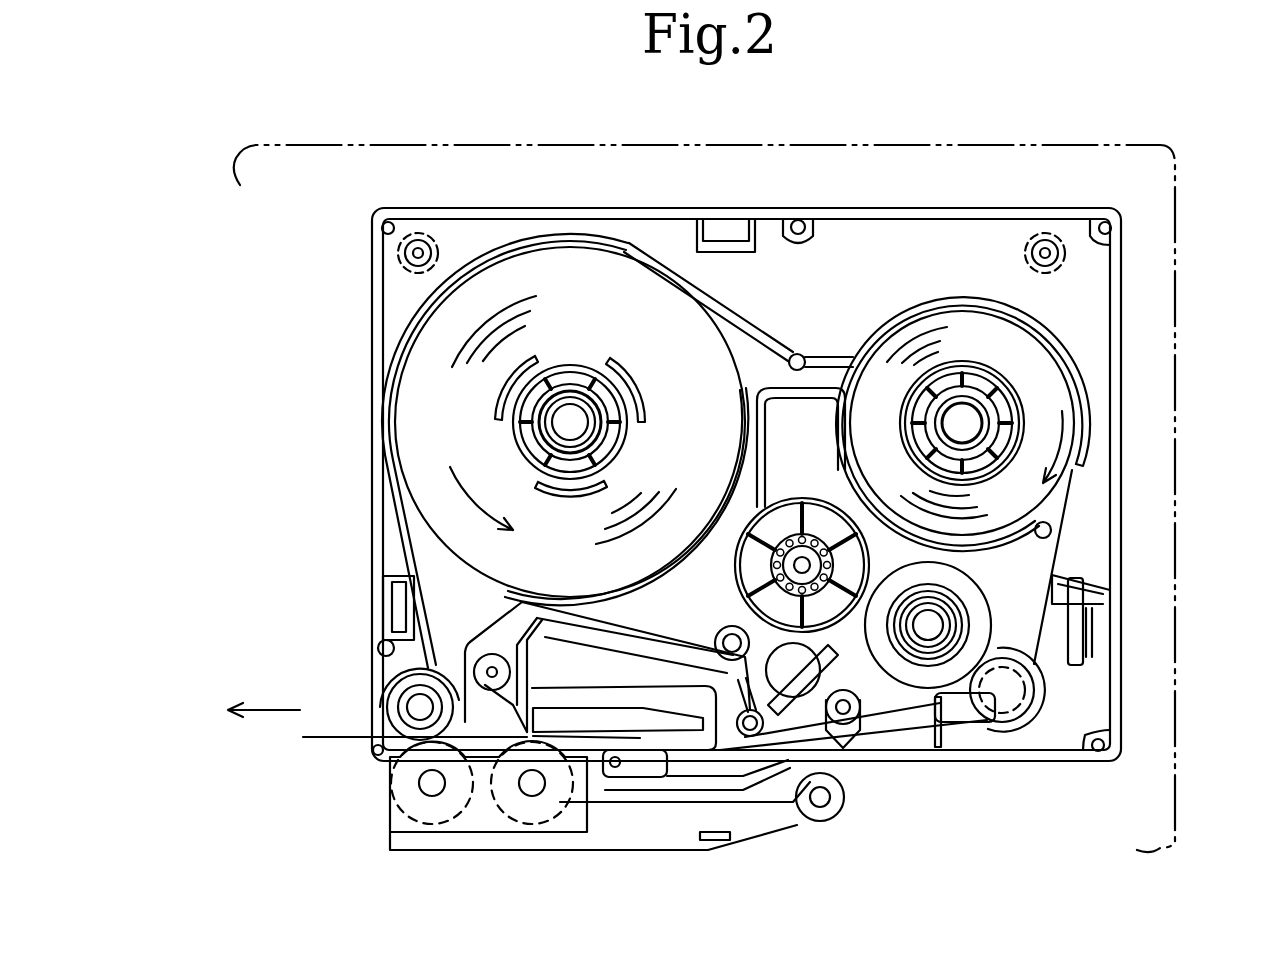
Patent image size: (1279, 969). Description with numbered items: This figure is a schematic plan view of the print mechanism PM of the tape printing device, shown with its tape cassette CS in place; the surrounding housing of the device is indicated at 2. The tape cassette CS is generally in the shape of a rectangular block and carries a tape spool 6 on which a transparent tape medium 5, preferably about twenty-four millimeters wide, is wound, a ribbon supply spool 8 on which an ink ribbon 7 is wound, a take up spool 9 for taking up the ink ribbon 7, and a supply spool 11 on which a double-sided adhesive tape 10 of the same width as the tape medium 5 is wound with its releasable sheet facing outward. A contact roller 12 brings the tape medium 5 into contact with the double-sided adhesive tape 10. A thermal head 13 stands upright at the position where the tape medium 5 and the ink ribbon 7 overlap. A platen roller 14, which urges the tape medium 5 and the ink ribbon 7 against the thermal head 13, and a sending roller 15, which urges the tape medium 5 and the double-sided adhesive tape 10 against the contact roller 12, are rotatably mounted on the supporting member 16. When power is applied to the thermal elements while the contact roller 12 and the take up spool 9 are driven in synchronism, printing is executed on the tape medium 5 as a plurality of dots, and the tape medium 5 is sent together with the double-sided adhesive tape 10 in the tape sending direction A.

The cassette holder 2 is at (1183, 265).
The tape cassette CS is at (1140, 482).
The tape medium 5 is at (977, 328).
The tape spool 6 is at (1012, 387).
The ink ribbon 7 is at (980, 606).
The ribbon supply spool 8 is at (980, 626).
The take up spool 9 is at (818, 500).
The double-sided adhesive tape 10 is at (545, 268).
The supply spool 11 is at (590, 375).
The contact roller 12 is at (403, 672).
The thermal head 13 is at (585, 745).
The platen roller 14 is at (505, 820).
The sending roller 15 is at (412, 818).
The supporting member 16 is at (703, 848).
The tape sending direction A is at (262, 710).
The print mechanism PM is at (264, 820).